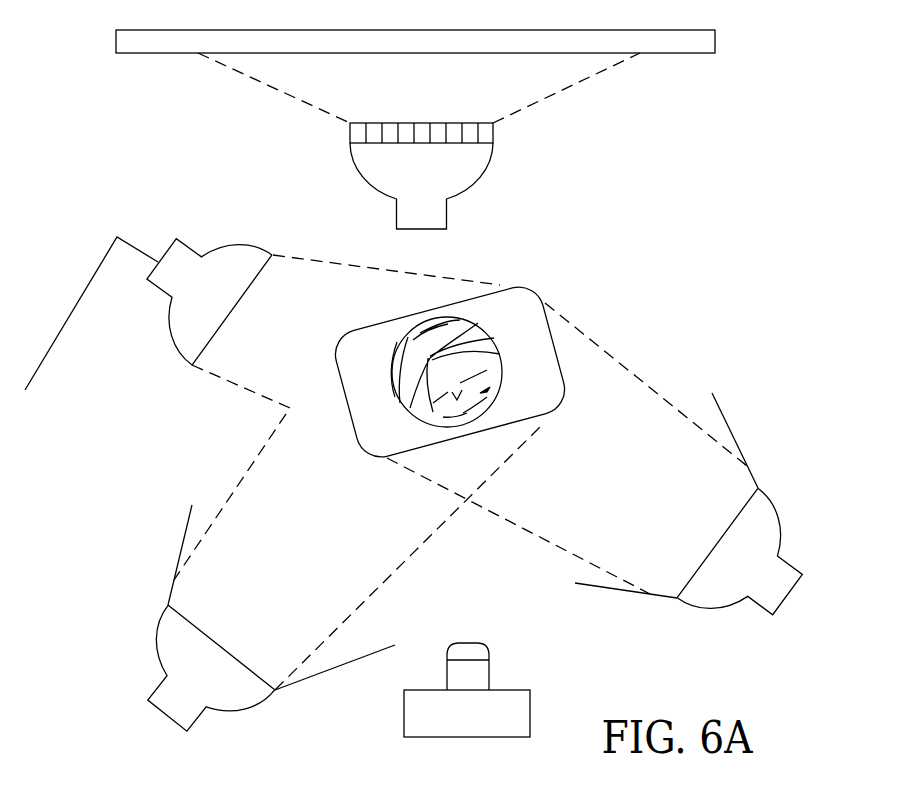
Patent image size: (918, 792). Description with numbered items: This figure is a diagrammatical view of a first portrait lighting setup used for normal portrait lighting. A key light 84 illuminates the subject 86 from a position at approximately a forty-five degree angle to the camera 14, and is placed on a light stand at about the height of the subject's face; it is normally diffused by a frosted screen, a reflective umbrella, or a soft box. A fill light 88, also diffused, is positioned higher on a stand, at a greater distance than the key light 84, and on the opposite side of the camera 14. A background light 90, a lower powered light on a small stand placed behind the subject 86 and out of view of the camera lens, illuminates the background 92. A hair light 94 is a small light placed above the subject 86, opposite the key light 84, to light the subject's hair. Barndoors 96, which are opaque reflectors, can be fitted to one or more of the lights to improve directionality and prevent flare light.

The camera 14 is at (404, 725).
The key light 84 is at (777, 518).
The subject 86 is at (540, 300).
The fill light 88 is at (158, 656).
The background light 90 is at (487, 170).
The background 92 is at (715, 40).
The hair light 94 is at (177, 342).
The barndoors 96 is at (182, 542).